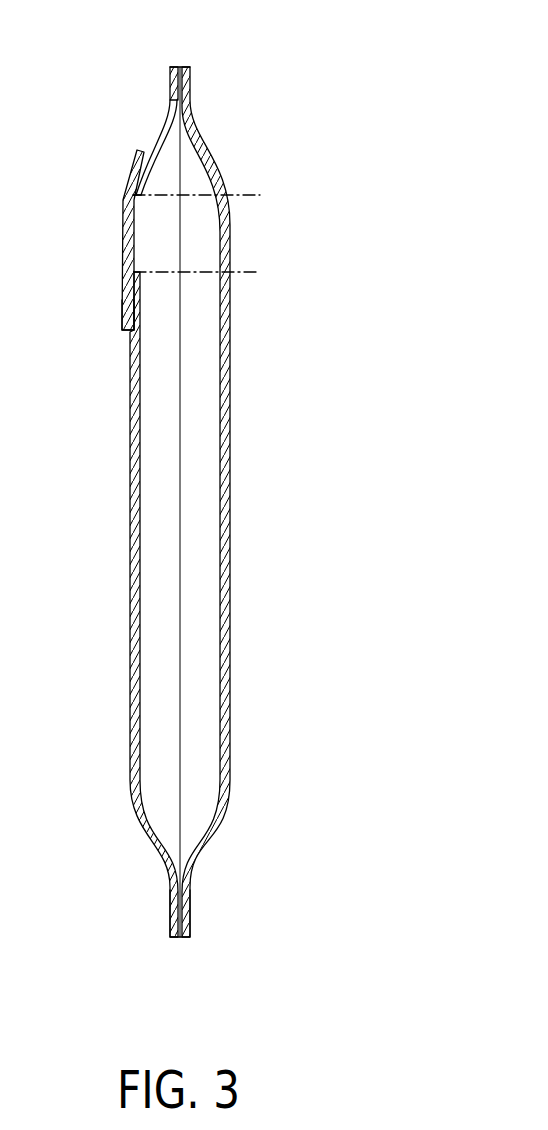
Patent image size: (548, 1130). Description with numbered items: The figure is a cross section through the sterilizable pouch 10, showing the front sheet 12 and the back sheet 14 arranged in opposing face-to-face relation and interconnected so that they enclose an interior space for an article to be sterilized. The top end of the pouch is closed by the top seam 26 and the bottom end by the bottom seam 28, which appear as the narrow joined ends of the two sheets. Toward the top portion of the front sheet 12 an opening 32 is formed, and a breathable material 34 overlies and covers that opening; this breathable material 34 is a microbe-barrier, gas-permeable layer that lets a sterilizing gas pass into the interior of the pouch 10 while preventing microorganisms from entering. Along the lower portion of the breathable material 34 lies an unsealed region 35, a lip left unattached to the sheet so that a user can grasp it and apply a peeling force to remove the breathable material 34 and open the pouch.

The sterilizable pouch 10 is at (246, 473).
The front sheet 12 is at (130, 472).
The back sheet 14 is at (230, 460).
The top seam 26 is at (190, 82).
The bottom seam 28 is at (190, 922).
The opening 32 is at (260, 195).
The breathable material 34 is at (122, 271).
The unsealed region 35 is at (122, 308).